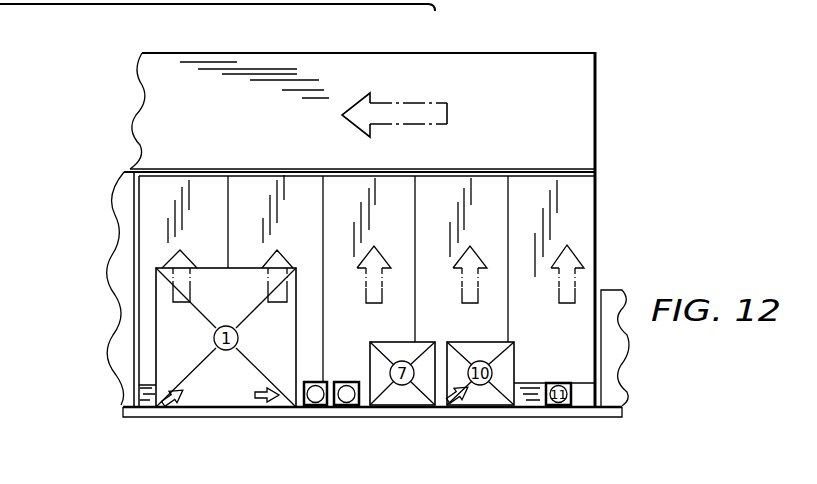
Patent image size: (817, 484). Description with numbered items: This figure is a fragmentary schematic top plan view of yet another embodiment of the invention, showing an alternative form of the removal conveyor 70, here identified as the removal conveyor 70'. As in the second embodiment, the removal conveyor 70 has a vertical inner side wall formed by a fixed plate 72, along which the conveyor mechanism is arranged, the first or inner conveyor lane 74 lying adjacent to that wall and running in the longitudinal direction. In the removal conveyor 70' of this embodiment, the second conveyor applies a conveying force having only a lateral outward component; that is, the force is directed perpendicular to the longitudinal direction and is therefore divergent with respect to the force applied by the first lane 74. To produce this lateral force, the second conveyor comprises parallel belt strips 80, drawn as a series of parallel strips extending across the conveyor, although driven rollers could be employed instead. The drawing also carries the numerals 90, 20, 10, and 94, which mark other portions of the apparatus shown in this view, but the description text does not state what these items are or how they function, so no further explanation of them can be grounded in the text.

The removal conveyor 70 is at (217, 21).
The exhaust plenum 90 is at (582, 79).
The parallel belt strips 80 is at (197, 198).
The removal conveyor 70' is at (422, 229).
The support block 20 is at (616, 281).
The cabinet wall 10 is at (111, 269).
The fixed plate 72 is at (147, 409).
The first or inner conveyor lane 74 is at (300, 381).
The wall panel 94 is at (8, 227).